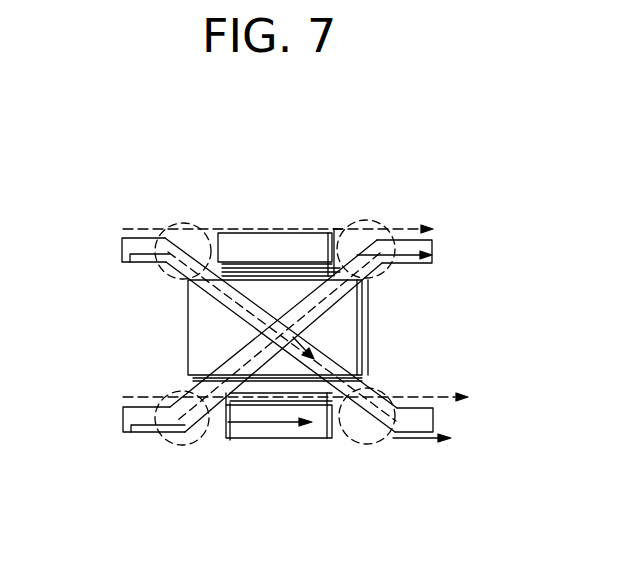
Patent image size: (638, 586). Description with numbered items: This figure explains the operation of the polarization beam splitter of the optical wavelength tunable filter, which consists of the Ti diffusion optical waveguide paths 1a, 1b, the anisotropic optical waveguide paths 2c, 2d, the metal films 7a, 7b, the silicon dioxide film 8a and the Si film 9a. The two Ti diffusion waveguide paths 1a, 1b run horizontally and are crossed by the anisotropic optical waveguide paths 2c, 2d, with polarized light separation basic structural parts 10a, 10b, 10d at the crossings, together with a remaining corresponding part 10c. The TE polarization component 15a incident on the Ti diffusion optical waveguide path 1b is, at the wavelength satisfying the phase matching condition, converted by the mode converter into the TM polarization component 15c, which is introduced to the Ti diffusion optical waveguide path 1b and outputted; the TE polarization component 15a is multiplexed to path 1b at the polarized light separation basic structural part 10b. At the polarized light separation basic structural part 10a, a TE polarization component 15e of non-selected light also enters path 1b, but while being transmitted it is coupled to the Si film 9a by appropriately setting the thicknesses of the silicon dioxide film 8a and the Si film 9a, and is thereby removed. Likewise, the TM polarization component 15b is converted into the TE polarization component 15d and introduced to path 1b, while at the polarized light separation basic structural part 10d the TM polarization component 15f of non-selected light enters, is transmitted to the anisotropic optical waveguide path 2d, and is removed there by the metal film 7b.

The Ti diffusion optical waveguide path 1a is at (147, 228).
The Ti diffusion optical waveguide path 1b is at (151, 437).
The anisotropic optical waveguide path 2c is at (340, 229).
The anisotropic optical waveguide path 2d is at (215, 441).
The metal film 7a is at (281, 229).
The metal film 7b is at (314, 441).
The SiO2 film 8a is at (366, 300).
The Si film 9a is at (366, 338).
The polarized light separation basic structural part 10a is at (192, 229).
The polarized light separation basic structural part 10b is at (378, 229).
The third optical port 10c is at (369, 444).
The polarized light separation basic structural part 10d is at (192, 441).
The TE polarization component 15a is at (131, 229).
The TM polarization component 15b is at (127, 434).
The TM polarization component 15c is at (126, 267).
The TE polarization component 15d is at (130, 397).
The TE polarization component of non-selected light 15e is at (318, 352).
The TM polarization component of non-selected light 15f is at (290, 441).